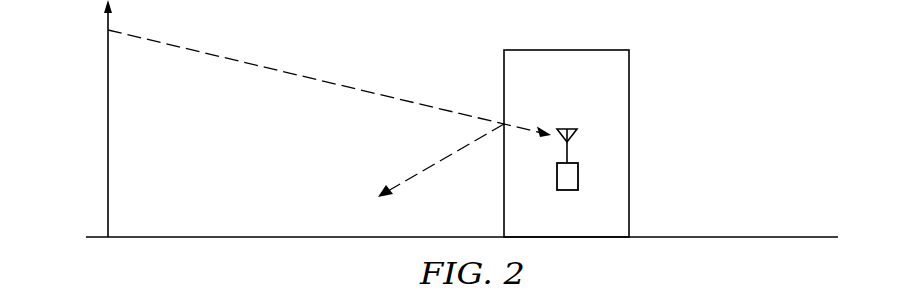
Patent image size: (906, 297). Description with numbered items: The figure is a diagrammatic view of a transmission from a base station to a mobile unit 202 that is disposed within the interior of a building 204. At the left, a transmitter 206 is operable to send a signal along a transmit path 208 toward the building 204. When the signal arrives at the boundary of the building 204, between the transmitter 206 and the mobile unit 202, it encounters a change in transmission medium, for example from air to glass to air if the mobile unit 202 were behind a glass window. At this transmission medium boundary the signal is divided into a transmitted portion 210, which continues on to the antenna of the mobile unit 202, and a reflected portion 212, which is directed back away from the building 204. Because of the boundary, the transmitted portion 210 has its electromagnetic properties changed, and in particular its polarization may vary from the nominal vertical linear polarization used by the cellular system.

The mobile unit 202 is at (578, 175).
The building 204 is at (629, 112).
The transmitter 206 is at (108, 80).
The transmit path 208 is at (320, 82).
The transmitted portion 210 is at (534, 129).
The reflected portion 212 is at (430, 164).